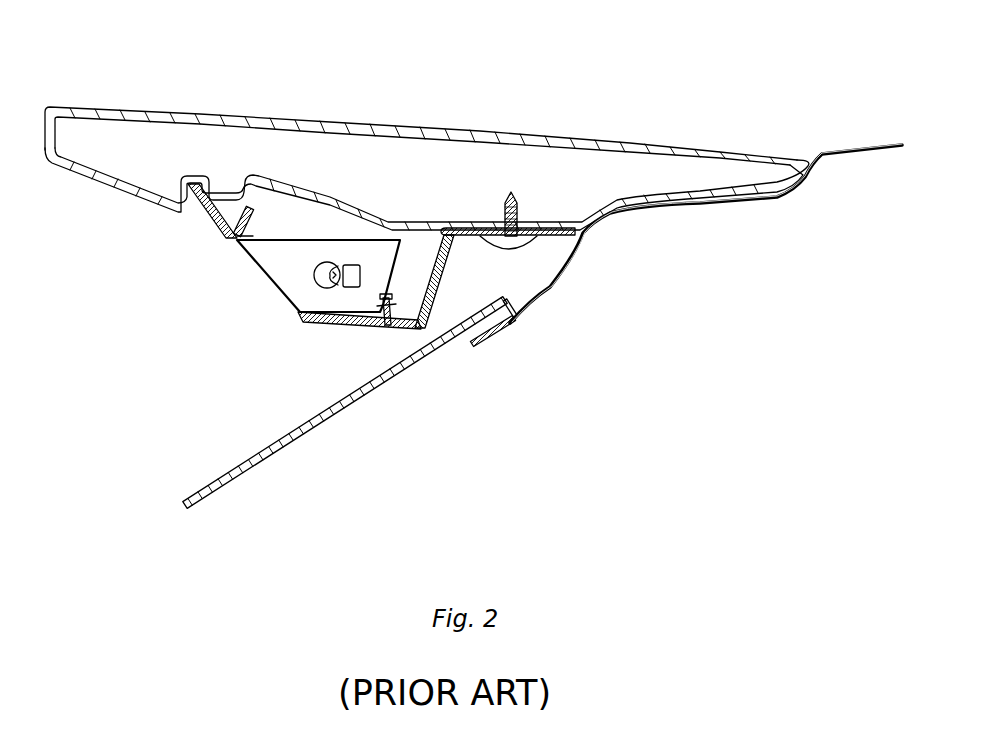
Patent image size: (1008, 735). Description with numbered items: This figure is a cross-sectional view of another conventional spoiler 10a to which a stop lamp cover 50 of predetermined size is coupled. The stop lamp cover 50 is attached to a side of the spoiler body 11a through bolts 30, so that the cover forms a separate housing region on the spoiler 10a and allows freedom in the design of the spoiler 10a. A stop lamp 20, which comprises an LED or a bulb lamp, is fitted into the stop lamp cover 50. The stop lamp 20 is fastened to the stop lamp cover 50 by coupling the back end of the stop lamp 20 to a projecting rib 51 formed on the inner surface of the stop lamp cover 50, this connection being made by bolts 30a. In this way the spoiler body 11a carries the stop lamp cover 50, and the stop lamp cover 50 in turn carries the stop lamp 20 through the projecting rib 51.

The spoiler 10a is at (565, 136).
The spoiler body 11a is at (233, 120).
The stop lamp 20 is at (267, 280).
The bolts 30 is at (509, 240).
The bolts 30a is at (390, 326).
The stop lamp cover 50 is at (214, 222).
The projecting rib 51 is at (398, 330).